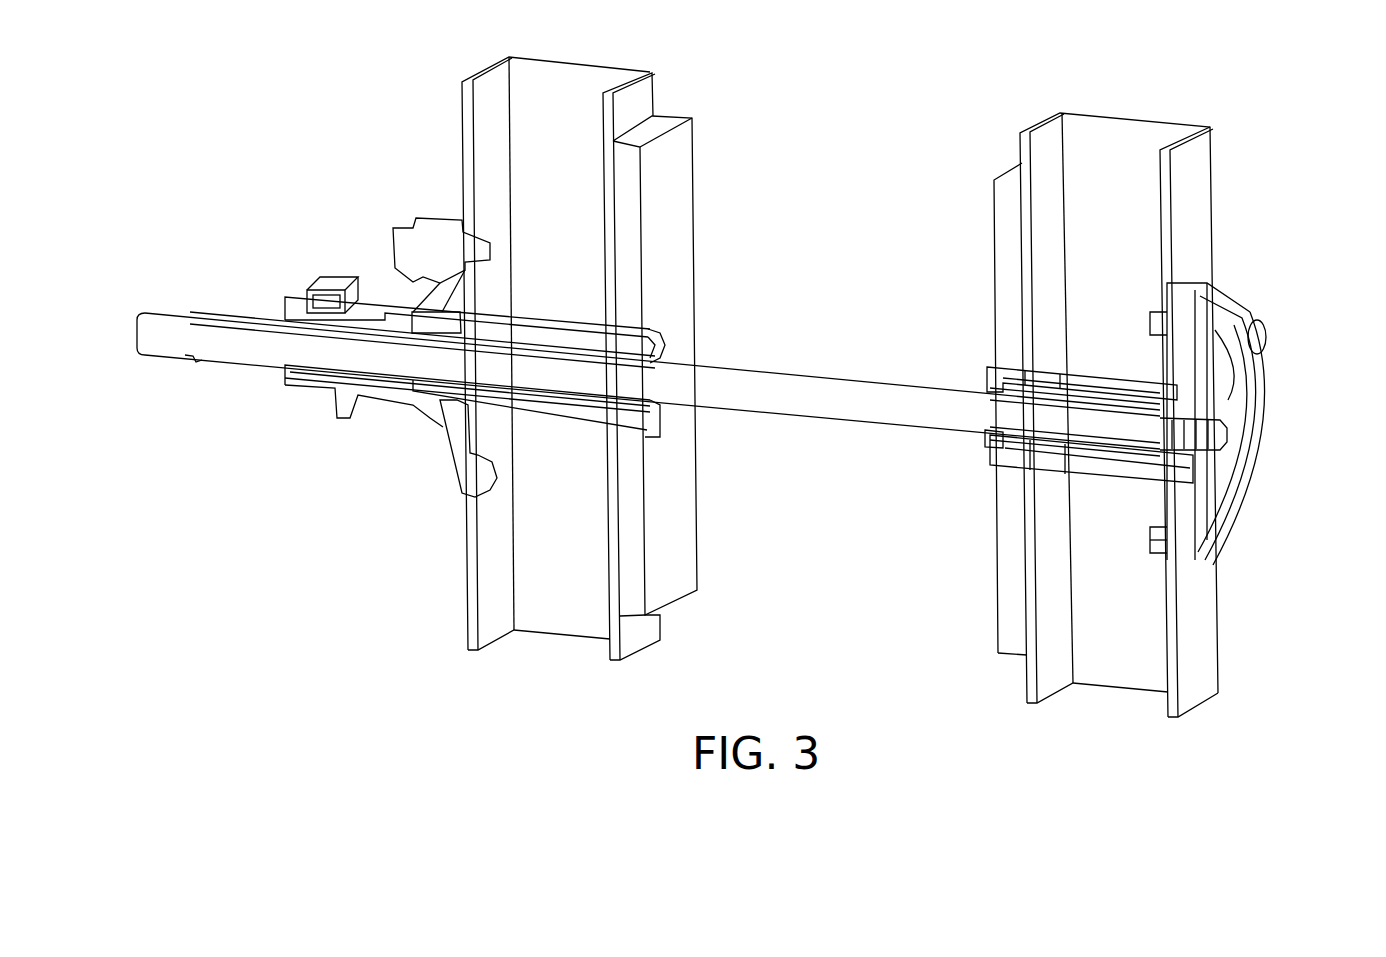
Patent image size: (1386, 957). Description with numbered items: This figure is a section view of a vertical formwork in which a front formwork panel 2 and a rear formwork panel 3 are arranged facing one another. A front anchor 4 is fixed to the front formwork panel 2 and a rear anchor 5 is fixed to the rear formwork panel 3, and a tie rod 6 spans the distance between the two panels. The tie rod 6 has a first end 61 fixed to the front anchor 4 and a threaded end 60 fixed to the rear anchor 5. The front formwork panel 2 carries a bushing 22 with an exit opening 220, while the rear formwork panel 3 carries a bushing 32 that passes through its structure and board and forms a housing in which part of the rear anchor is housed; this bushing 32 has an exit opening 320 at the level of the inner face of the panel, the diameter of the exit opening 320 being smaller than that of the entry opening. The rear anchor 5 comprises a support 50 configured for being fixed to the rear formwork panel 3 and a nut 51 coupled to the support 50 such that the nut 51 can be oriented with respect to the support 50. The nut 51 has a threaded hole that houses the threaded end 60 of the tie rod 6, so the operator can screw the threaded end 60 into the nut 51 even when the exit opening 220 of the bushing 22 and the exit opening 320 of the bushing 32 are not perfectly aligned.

The front formwork panel 2 is at (458, 165).
The rear formwork panel 3 is at (1215, 205).
The front anchor 4 is at (465, 543).
The rear anchor 5 is at (1237, 512).
The tie rod 6 is at (850, 378).
The bushing 22 is at (487, 418).
The bushing 32 is at (1097, 477).
The support 50 is at (1197, 553).
The nut 51 is at (1227, 400).
The threaded end 60 is at (1072, 420).
The first end 61 is at (273, 350).
The exit opening 220 is at (663, 358).
The exit opening 320 is at (993, 440).